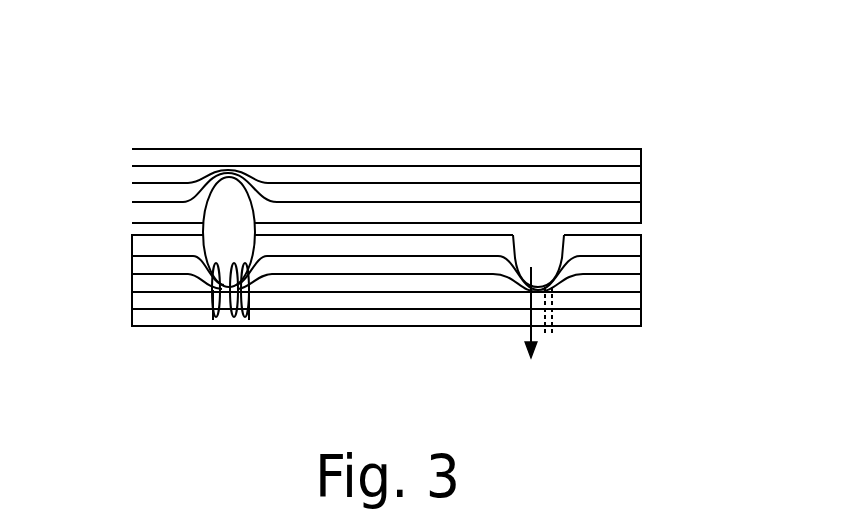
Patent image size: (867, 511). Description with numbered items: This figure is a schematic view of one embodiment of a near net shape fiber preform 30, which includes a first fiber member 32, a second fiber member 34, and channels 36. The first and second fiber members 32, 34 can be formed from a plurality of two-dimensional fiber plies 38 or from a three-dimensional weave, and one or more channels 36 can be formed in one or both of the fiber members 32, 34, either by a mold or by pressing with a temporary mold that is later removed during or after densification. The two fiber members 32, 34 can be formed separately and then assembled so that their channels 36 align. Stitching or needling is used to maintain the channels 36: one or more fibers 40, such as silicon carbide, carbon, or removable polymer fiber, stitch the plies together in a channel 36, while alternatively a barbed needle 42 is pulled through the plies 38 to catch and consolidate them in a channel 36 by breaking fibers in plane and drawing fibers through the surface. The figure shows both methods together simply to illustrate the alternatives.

The near net shape fiber preform 30 is at (630, 119).
The first fiber member 32 is at (155, 326).
The second fiber member 34 is at (178, 148).
The channels 36 is at (230, 242).
The 2D fiber plies 38 is at (623, 256).
The fibers 40 is at (250, 289).
The barbed needle 42 is at (527, 333).